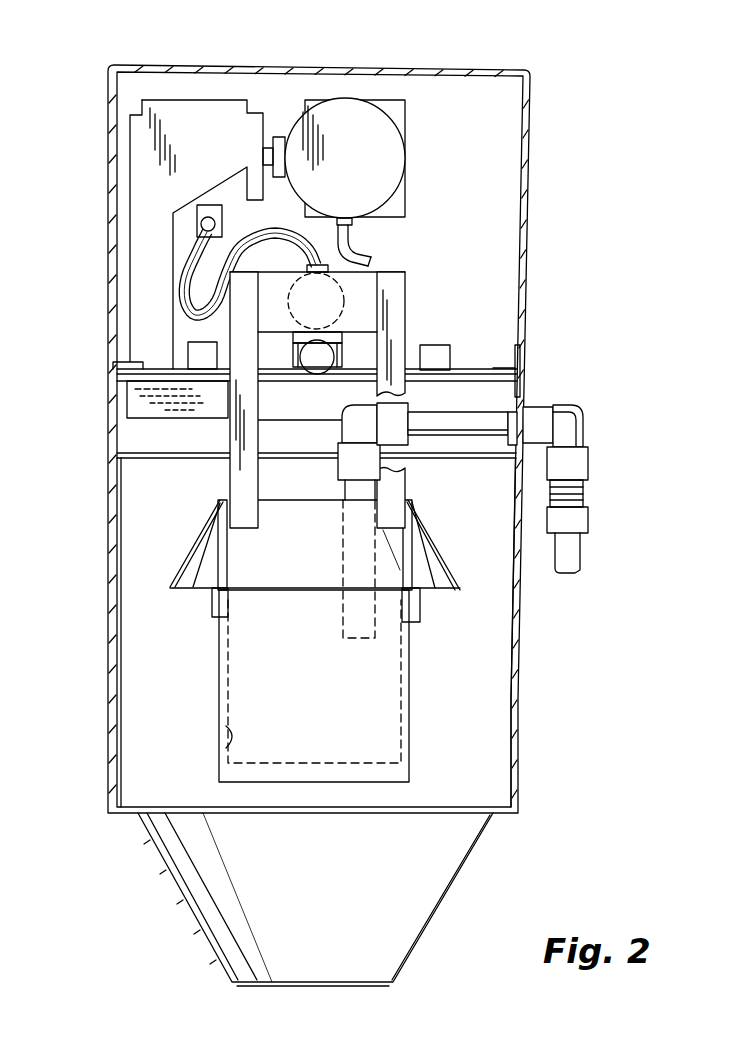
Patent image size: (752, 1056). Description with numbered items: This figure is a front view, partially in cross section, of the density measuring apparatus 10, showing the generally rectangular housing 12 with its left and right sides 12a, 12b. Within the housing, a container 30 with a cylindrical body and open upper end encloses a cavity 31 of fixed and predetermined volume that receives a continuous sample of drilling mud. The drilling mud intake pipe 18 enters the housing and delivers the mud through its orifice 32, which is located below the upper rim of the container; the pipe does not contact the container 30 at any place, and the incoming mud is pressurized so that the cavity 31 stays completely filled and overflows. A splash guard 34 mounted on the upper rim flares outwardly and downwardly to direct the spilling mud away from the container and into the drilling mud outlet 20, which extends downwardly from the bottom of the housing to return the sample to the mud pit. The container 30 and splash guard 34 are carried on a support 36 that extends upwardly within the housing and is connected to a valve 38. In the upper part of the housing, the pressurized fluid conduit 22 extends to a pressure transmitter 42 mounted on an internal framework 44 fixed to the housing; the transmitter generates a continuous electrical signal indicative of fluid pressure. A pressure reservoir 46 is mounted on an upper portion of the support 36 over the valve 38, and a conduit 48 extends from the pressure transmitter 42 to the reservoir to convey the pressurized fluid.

The apparatus 10 is at (556, 340).
The housing 12 is at (110, 485).
The left side 12a is at (535, 676).
The right side 12b is at (100, 663).
The drilling mud intake pipe 18 is at (483, 432).
The drilling mud outlet 20 is at (440, 908).
The pressurized fluid conduit 22 is at (360, 248).
The container 30 is at (242, 682).
The cavity 31 is at (228, 740).
The orifice 32 is at (363, 640).
The splash guard 34 is at (200, 558).
The support 36 is at (229, 481).
The valve 38 is at (358, 359).
The pressure transmitter 42 is at (352, 108).
The internal framework 44 is at (178, 112).
The pressure reservoir 46 is at (337, 302).
The conduit 48 is at (300, 213).